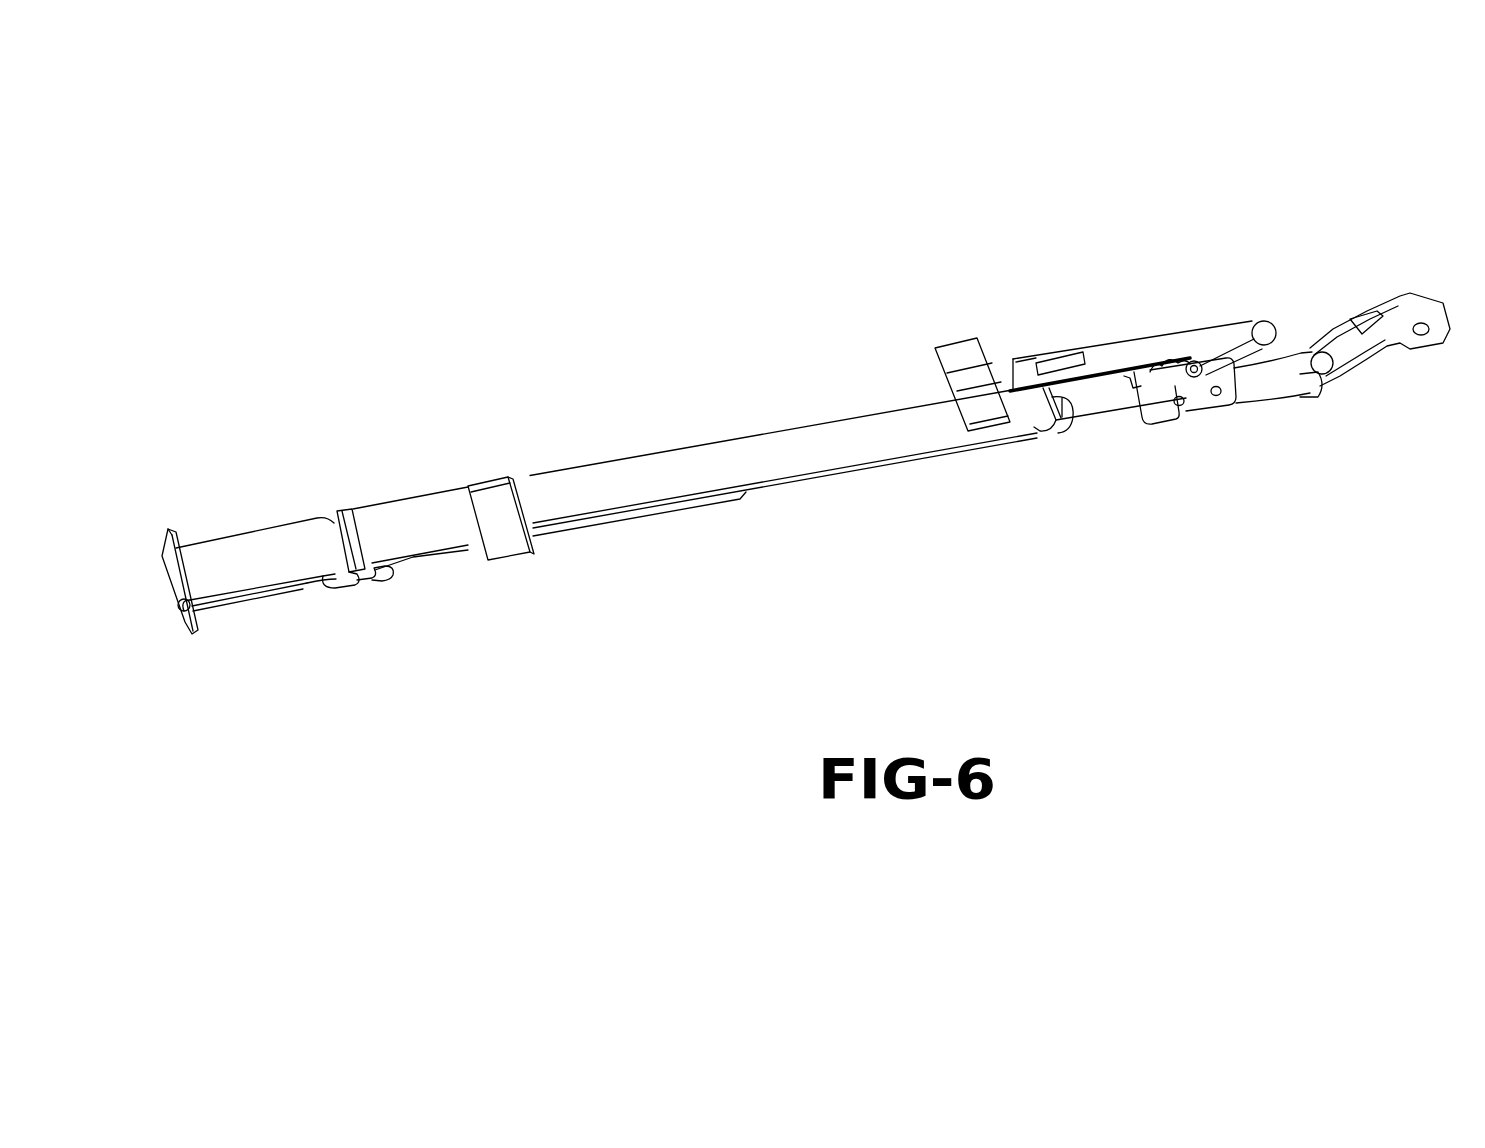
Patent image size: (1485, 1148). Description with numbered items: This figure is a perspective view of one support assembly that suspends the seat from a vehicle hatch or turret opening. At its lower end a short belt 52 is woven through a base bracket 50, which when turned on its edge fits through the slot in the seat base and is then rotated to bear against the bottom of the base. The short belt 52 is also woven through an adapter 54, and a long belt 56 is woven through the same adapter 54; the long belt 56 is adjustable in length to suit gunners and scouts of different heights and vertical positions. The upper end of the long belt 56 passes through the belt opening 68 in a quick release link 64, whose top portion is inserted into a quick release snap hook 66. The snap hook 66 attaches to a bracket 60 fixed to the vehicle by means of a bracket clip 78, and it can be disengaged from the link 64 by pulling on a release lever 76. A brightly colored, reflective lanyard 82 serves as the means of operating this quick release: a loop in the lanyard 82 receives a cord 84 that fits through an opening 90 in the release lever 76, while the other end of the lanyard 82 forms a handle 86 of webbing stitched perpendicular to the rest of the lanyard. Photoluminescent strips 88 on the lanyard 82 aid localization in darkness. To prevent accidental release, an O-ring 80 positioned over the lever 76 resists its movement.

The base bracket 50 is at (178, 638).
The short belt 52 is at (246, 556).
The adapter 54 is at (358, 582).
The long belt 56 is at (566, 488).
The bracket 60 is at (1413, 348).
The quick release link 64 is at (1096, 404).
The quick release snap hook 66 is at (1247, 416).
The belt opening 68 is at (1075, 423).
The release lever 76 is at (1265, 320).
The bracket clip 78 is at (1312, 398).
The O-ring 80 is at (1200, 356).
The lanyard 82 is at (1122, 350).
The cord 84 is at (1222, 348).
The handle 86 is at (962, 353).
The photoluminescent strips 88 is at (1050, 362).
The opening 90 is at (1300, 340).